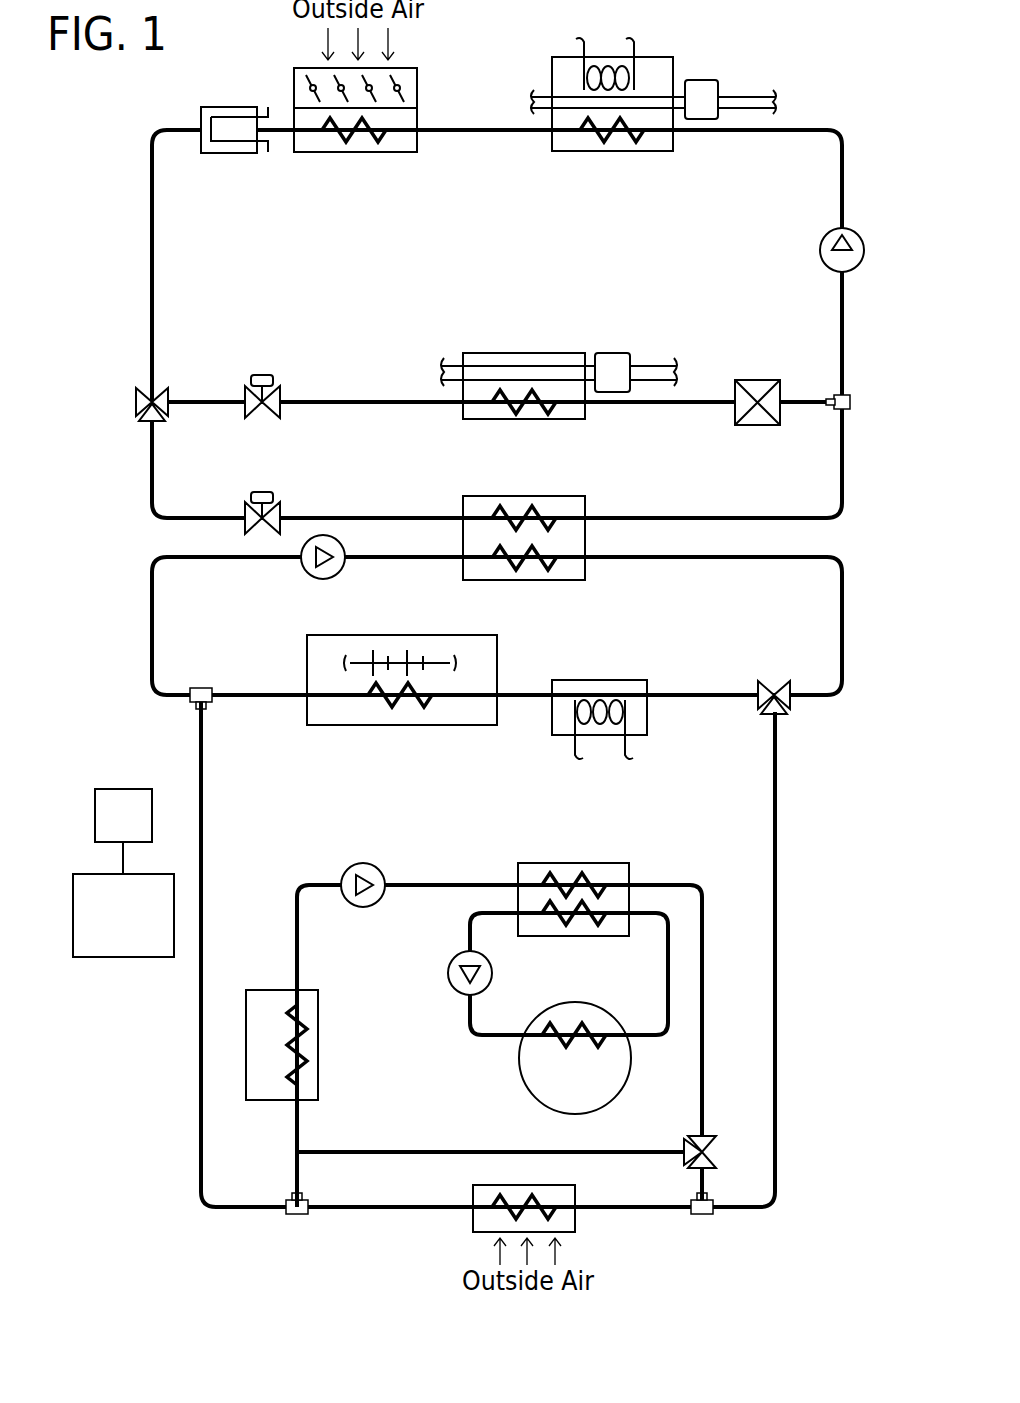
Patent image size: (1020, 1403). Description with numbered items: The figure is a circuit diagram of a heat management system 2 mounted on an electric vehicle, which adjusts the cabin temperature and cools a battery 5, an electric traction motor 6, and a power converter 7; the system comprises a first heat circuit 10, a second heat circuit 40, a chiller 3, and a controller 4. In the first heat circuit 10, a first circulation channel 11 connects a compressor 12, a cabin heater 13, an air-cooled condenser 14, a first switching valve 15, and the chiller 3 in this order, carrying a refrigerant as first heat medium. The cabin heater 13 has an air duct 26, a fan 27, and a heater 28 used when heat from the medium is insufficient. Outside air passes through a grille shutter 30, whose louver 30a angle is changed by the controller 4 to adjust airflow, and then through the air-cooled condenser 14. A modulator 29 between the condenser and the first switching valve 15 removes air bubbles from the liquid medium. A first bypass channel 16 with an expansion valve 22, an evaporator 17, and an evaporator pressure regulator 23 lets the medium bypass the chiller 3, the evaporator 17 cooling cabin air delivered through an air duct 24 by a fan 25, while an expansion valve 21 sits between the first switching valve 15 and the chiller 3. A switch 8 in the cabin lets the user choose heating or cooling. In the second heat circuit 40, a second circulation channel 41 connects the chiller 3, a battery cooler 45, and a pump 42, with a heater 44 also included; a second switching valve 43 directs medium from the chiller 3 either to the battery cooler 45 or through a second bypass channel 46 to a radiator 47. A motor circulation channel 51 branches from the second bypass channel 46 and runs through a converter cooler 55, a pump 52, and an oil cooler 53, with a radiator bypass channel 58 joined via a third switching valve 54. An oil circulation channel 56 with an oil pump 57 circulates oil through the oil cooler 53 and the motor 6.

The heat management system 2 is at (94, 98).
The first heat circuit 10 is at (128, 210).
The first circulation channel 11 is at (840, 182).
The compressor 12 is at (850, 272).
The cabin heater 13 is at (564, 152).
The air-cooled condenser 14 is at (306, 153).
The first switching valve 15 is at (138, 396).
The first bypass channel 16 is at (356, 400).
The evaporator 17 is at (490, 352).
The expansion valve 21 is at (265, 491).
The expansion valve 22 is at (265, 374).
The evaporator pressure regulator 23 is at (758, 380).
The air duct 24 is at (652, 366).
The fan 25 is at (612, 352).
The air duct 26 is at (756, 96).
The fan 27 is at (706, 80).
The heater 28 is at (638, 80).
The modulator 29 is at (225, 154).
The grille shutter 30 is at (418, 76).
The louver 30a is at (300, 80).
The chiller 3 is at (530, 582).
The controller 4 is at (122, 958).
The battery 5 is at (306, 656).
The motor 6 is at (528, 1096).
The power converter 7 is at (262, 1101).
The switch 8 is at (110, 789).
The second heat circuit 40 is at (118, 580).
The second circulation channel 41 is at (422, 560).
The pump 42 is at (306, 572).
The second switching valve 43 is at (772, 684).
The heater 44 is at (636, 680).
The battery cooler 45 is at (395, 712).
The second bypass channel 46 is at (778, 822).
The radiator 47 is at (578, 1229).
The motor circulation channel 51 is at (433, 883).
The pump 52 is at (366, 862).
The oil cooler 53 is at (616, 862).
The third switching valve 54 is at (708, 1140).
The converter cooler 55 is at (318, 1048).
The oil circulation channel 56 is at (466, 1030).
The oil pump 57 is at (447, 976).
The radiator bypass channel 58 is at (398, 1150).